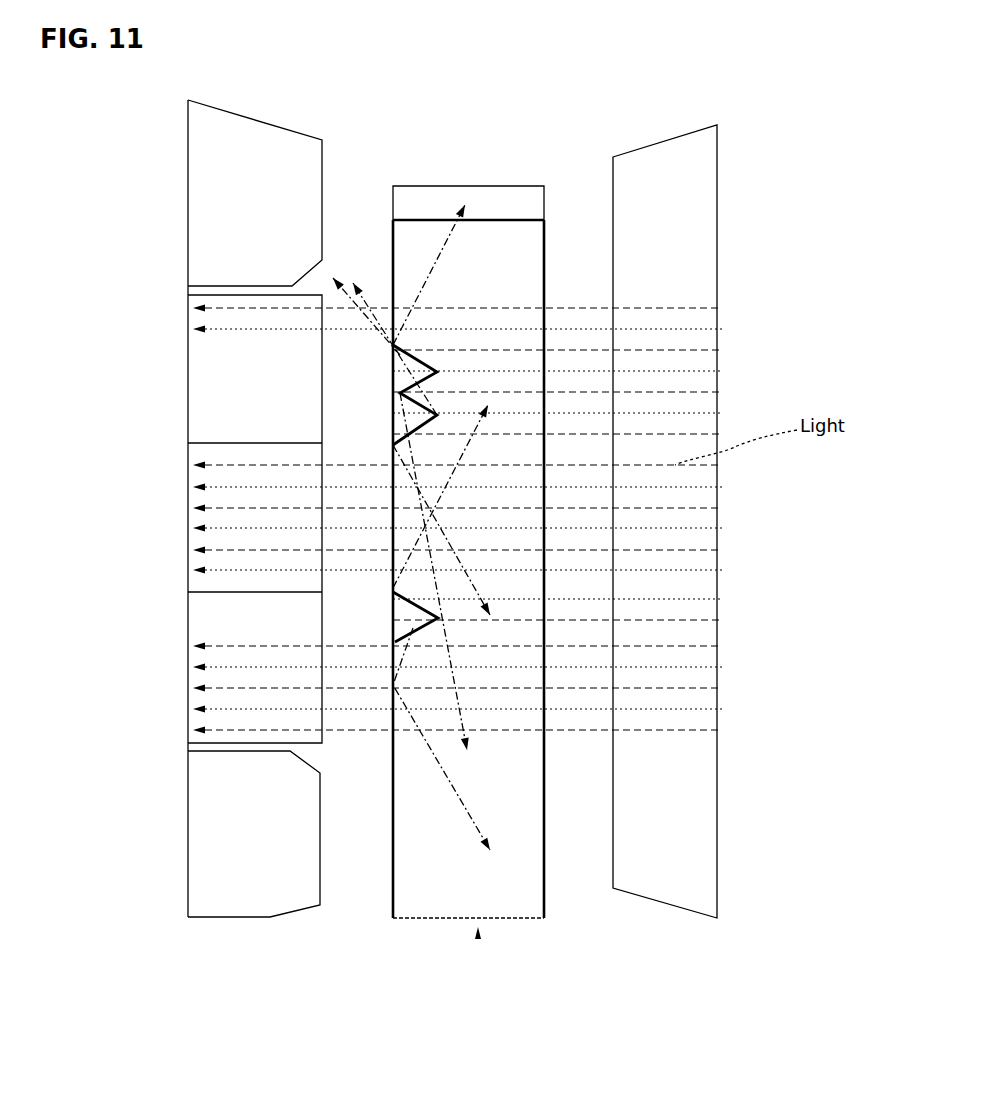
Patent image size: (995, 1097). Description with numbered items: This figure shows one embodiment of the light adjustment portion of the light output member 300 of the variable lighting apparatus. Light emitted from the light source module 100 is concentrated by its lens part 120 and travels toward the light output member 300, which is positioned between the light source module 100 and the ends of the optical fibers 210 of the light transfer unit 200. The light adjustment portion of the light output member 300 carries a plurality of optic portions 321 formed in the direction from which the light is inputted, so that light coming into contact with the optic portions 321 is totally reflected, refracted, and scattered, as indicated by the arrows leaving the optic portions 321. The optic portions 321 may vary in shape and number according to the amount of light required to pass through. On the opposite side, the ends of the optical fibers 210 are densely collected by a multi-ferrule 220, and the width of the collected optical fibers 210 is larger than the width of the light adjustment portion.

The light source module 100 is at (730, 521).
The lens part 120 is at (675, 238).
The light transfer unit 200 is at (189, 545).
The optical fibers 210 is at (256, 745).
The multi-ferrule 220 is at (297, 910).
The light output member 300 is at (478, 938).
The optic portions 321 is at (412, 400).